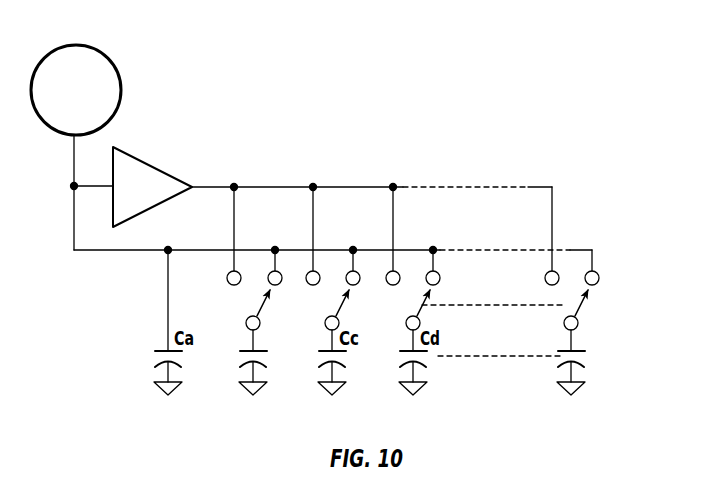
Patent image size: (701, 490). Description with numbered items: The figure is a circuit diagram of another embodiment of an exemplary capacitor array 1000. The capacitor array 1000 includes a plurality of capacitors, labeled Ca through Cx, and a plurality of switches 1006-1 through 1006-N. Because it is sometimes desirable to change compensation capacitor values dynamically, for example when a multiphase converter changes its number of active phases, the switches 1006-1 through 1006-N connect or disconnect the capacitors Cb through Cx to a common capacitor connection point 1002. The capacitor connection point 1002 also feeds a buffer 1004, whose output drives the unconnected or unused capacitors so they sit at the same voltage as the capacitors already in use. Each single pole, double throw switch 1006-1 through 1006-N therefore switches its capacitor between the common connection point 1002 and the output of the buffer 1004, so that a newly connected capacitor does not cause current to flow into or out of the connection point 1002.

The capacitor array 1000 is at (506, 89).
The capacitor connection point 1002 is at (121, 89).
The buffer 1004 is at (158, 165).
The switch 1006-1 is at (246, 293).
The switch 1006-N is at (573, 303).